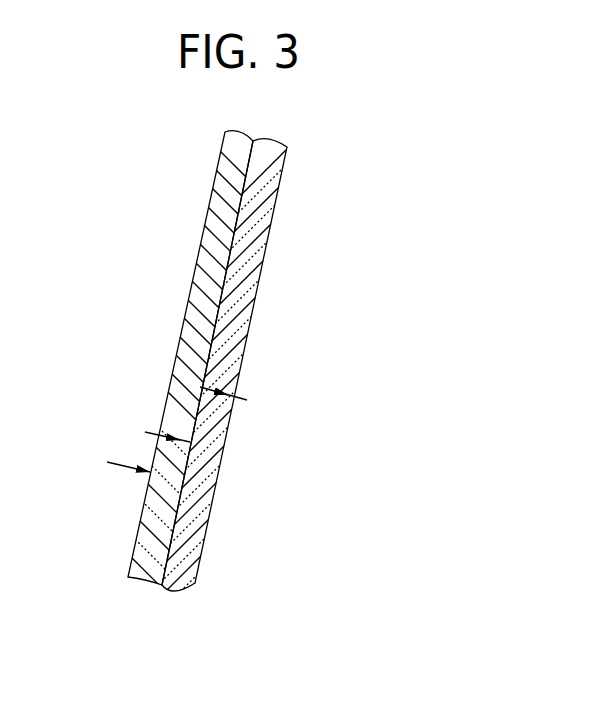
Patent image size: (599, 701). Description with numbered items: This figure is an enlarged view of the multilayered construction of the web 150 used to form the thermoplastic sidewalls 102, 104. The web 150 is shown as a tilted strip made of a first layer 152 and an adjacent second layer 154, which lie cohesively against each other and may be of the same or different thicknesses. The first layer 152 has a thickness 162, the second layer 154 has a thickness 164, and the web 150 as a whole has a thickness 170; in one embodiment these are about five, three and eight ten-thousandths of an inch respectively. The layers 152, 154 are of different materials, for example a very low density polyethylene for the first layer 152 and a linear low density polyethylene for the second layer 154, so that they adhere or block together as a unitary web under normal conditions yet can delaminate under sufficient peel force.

The web 150 is at (148, 173).
The first layer 152 is at (193, 275).
The second layer 154 is at (267, 245).
The sidewall 102 is at (299, 360).
The sidewall 104 is at (300, 338).
The thickness 162 is at (170, 383).
The thickness 164 is at (226, 451).
The thickness 170 is at (220, 488).